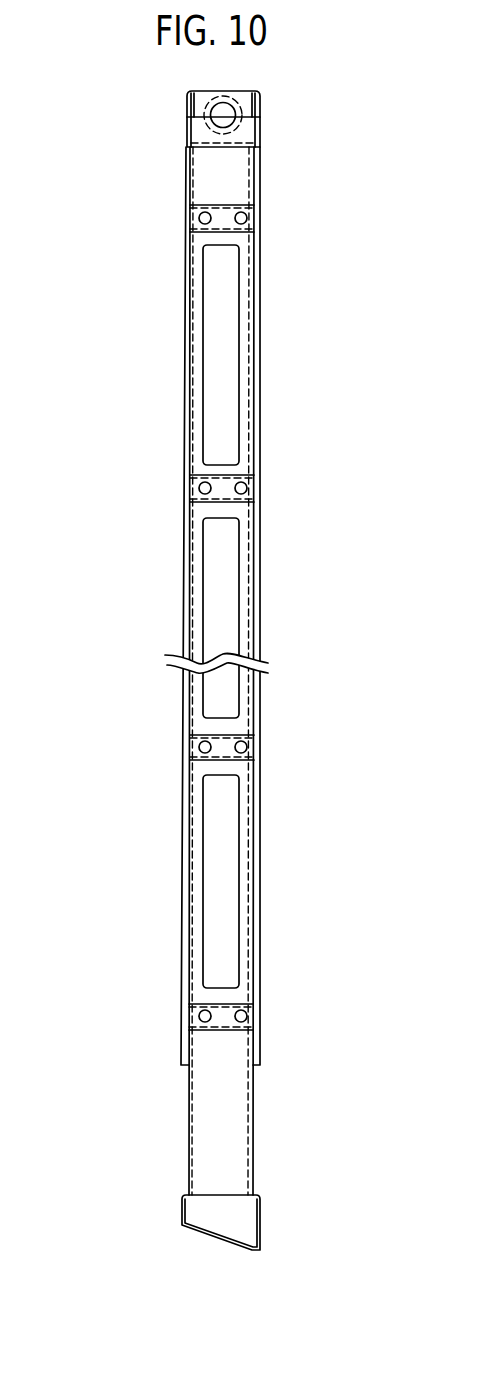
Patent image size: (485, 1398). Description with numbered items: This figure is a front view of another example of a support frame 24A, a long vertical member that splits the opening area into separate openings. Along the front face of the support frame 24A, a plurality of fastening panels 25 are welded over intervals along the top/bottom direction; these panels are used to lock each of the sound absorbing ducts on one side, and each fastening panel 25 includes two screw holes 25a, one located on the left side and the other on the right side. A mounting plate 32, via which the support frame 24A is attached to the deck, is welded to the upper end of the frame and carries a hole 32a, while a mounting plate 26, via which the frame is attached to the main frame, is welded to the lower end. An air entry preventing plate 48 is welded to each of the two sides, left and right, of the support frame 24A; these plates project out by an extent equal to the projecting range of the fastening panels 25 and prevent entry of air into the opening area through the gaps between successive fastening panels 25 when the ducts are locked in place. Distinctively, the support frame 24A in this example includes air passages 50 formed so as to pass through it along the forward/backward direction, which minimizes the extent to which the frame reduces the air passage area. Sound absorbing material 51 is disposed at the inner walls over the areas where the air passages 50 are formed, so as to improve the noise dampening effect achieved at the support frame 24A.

The support frame 24A is at (230, 669).
The fastening panel 25 is at (163, 231).
The screw hole 25a is at (236, 214).
The mounting plate 26 is at (257, 1220).
The mounting plate 32 is at (226, 117).
The cap hole 32a is at (211, 114).
The air entry preventing plate 48 is at (181, 905).
The air passage 50 is at (228, 378).
The sound absorbing material 51 is at (200, 399).